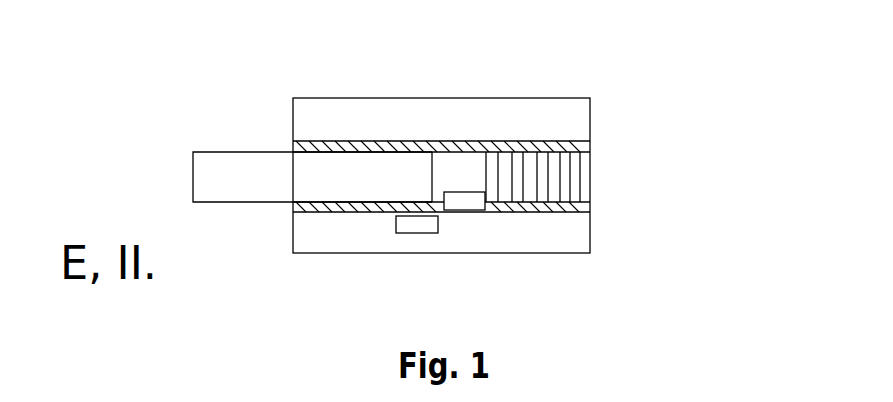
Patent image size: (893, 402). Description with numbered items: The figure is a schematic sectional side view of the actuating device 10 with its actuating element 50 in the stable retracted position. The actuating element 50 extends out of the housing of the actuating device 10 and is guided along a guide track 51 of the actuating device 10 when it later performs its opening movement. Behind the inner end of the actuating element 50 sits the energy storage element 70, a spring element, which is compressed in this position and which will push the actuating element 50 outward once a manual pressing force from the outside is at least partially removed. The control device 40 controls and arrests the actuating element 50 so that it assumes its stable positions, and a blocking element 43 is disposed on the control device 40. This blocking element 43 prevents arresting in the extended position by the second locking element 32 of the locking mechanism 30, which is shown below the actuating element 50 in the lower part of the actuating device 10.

The actuating device 10 is at (494, 177).
The locking mechanism 30 is at (321, 274).
The second locking element 32 is at (413, 223).
The control device 40 is at (440, 168).
The blocking element 43 is at (465, 203).
The actuating element 50 is at (266, 151).
The guide track 51 is at (376, 146).
The energy storage element 70 is at (543, 179).